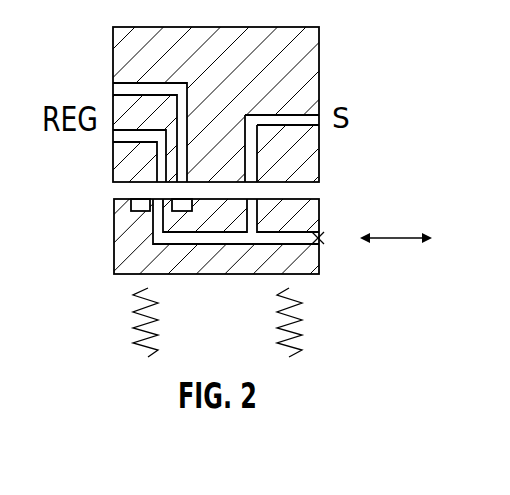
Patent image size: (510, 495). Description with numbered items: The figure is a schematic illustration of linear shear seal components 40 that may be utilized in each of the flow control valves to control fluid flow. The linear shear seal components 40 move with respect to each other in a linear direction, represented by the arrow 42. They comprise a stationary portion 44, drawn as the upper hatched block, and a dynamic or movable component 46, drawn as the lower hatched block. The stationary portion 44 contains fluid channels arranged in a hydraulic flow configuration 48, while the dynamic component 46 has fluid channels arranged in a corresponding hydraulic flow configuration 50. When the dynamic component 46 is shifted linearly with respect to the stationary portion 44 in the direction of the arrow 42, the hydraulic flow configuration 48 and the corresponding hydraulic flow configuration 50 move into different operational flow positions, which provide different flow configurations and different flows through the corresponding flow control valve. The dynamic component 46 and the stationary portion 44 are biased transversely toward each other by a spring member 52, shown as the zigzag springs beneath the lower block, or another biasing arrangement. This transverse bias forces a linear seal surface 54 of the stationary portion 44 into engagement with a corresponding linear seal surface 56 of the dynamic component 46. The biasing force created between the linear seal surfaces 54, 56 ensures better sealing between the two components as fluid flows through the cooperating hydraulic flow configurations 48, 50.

The linear shear seal components 40 is at (92, 202).
The arrow 42 is at (395, 239).
The stationary portion 44 is at (318, 44).
The dynamic component 46 is at (317, 265).
The hydraulic flow configuration 48 is at (308, 84).
The corresponding hydraulic flow configuration 50 is at (120, 248).
The spring member 52 is at (114, 327).
The linear seal surface 54 is at (310, 182).
The corresponding linear seal surface 56 is at (311, 196).